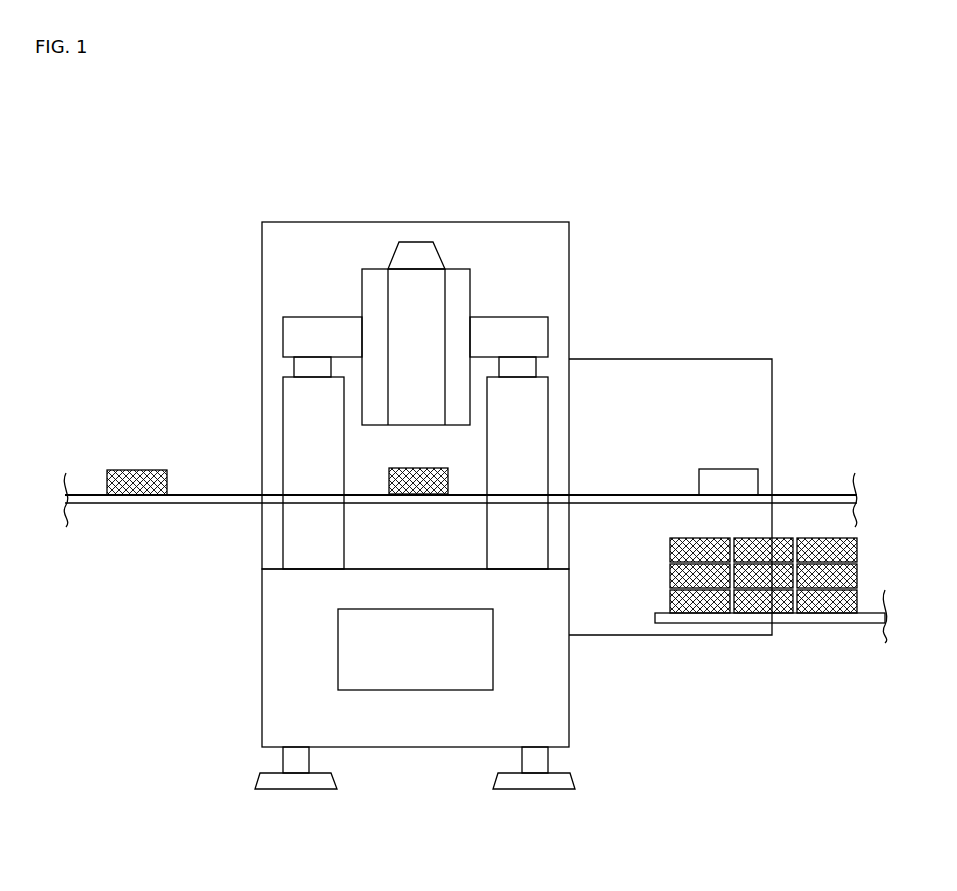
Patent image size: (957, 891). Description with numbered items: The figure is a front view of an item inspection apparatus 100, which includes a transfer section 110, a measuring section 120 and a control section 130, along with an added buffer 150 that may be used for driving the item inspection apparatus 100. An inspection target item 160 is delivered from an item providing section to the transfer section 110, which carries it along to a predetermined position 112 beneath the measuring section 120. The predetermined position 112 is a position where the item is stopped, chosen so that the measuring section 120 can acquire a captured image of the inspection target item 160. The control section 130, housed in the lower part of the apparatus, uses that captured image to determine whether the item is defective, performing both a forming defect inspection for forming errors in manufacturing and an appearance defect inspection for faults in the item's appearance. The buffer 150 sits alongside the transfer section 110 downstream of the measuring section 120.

The item inspection apparatus 100 is at (226, 184).
The transfer section 110 is at (198, 498).
The predetermined position 112 is at (377, 460).
The measuring section 120 is at (415, 285).
The control section 130 is at (415, 692).
The buffer 150 is at (673, 375).
The inspection target item 160 is at (133, 470).